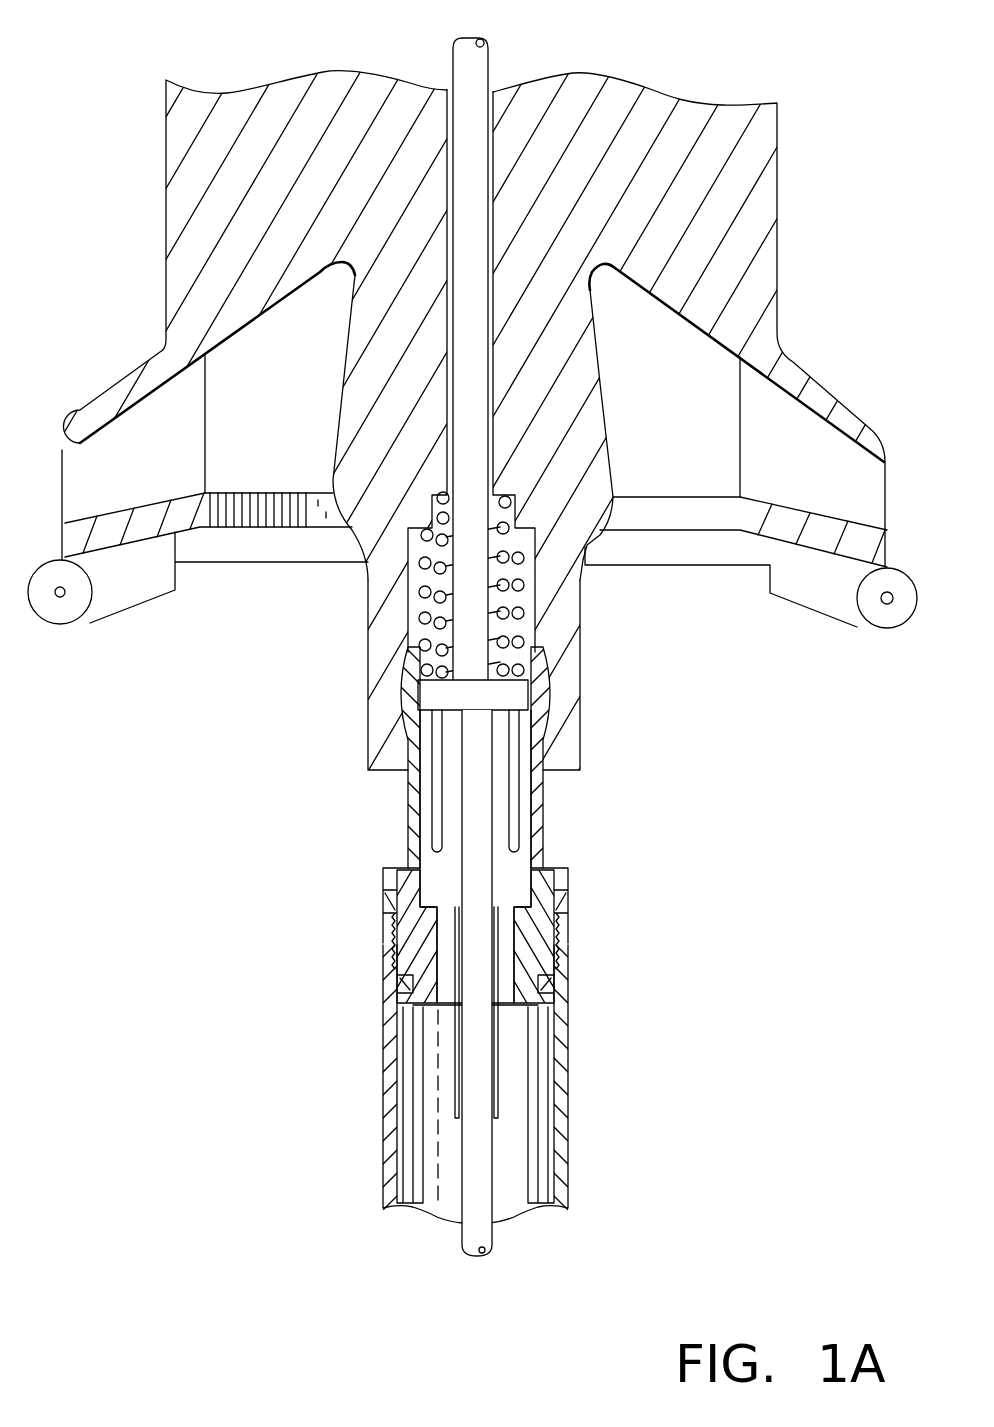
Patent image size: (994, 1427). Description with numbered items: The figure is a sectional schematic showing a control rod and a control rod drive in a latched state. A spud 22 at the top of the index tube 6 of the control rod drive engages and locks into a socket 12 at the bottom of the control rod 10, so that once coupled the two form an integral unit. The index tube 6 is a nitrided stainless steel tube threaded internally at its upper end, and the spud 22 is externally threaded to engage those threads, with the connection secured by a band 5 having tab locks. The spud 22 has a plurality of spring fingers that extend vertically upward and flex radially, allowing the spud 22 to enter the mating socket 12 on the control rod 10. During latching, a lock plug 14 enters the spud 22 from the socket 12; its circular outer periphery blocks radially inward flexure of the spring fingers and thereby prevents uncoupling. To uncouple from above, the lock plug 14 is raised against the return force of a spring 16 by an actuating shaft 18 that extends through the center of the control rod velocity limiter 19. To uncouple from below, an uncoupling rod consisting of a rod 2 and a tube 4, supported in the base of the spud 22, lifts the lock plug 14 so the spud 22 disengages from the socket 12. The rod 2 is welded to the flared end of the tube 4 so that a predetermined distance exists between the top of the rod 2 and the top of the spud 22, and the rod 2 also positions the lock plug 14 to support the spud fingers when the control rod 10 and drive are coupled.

The actuating shaft 18 is at (488, 67).
The control rod 10 is at (777, 180).
The control rod velocity limiter 19 is at (818, 380).
The spring 16 is at (522, 618).
The lock plug 14 is at (430, 692).
The socket 12 is at (580, 682).
The spud 22 is at (540, 820).
The rod 2 is at (470, 830).
The band 5 is at (384, 908).
The tube 4 is at (460, 1113).
The index tube 6 is at (568, 1185).